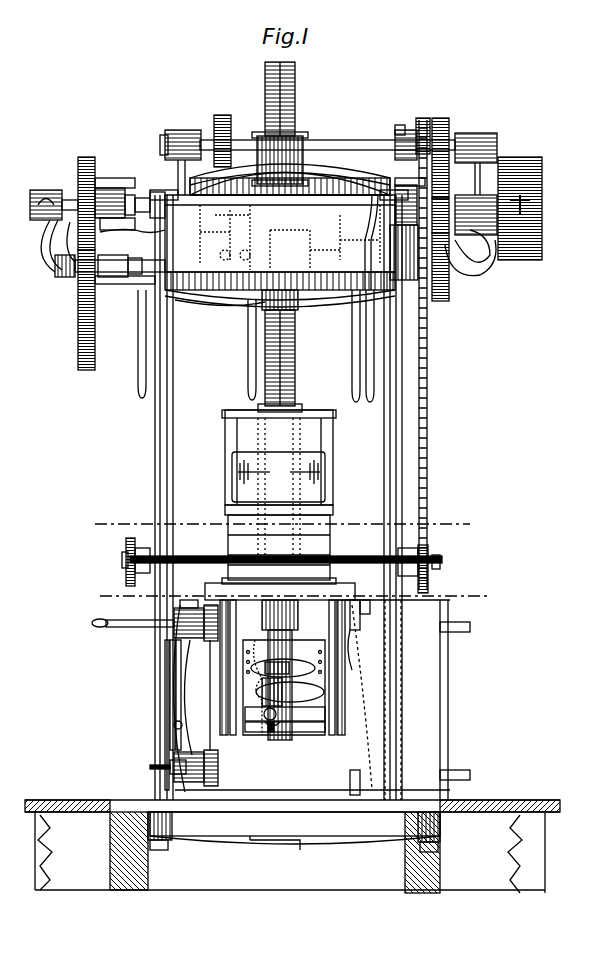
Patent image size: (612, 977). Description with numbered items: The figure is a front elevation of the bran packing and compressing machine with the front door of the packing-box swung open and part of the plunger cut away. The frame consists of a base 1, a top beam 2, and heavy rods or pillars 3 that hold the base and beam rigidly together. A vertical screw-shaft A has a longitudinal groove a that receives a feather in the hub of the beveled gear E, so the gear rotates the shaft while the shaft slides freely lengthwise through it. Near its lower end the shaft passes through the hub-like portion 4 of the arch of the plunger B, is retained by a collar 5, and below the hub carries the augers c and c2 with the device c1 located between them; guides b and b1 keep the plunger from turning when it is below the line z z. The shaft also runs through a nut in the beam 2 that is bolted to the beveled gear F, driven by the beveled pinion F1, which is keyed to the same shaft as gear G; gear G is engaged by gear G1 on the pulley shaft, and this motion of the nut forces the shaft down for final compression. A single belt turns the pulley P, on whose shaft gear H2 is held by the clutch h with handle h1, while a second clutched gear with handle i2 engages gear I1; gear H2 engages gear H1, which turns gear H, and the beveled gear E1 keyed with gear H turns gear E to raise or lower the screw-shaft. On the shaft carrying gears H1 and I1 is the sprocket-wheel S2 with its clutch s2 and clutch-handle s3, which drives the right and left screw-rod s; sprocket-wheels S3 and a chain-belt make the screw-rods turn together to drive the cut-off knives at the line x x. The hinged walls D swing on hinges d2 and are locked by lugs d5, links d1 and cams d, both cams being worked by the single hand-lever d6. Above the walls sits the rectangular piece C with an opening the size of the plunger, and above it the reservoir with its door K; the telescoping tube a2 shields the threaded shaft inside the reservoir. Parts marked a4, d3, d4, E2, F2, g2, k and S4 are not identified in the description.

The longitudinal groove a is at (276, 70).
The screw-shaft A is at (292, 345).
The telescoping tube a2 is at (298, 408).
The screw lower end a4 is at (275, 732).
The base 1 is at (292, 846).
The top beam 2 is at (280, 233).
The rods or pillars 3 is at (160, 448).
The hub-like portion 4 is at (280, 670).
The collar 5 is at (296, 668).
The plunger B is at (284, 687).
The guide b is at (236, 628).
The guide b1 is at (318, 625).
The rectangular piece C is at (210, 592).
The auger c is at (290, 692).
The device between augers c1 is at (285, 714).
The auger c2 is at (292, 732).
The hinged wall D is at (312, 700).
The cam d is at (162, 767).
The link d1 is at (184, 693).
The hinge d2 is at (350, 772).
The clamp rod d3 is at (186, 694).
The clamp rod d4 is at (185, 715).
The lug d5 is at (462, 624).
The hand-lever d6 is at (133, 616).
The beveled gear E is at (340, 168).
The beveled gear E1 is at (375, 185).
The shifter link E2 is at (470, 253).
The beveled gear F is at (280, 289).
The beveled pinion F1 is at (200, 295).
The counter shaft F2 is at (58, 265).
The gear G is at (78, 290).
The gear G1 is at (94, 168).
The clutch hub g2 is at (97, 204).
The gear H is at (446, 267).
The gear H1 is at (452, 128).
The gear H2 is at (450, 195).
The clutch h is at (443, 221).
The clutch handle h1 is at (371, 345).
The gear I1 is at (231, 133).
The clutch handle i2 is at (360, 130).
The door K is at (279, 497).
The clamp screws k is at (279, 472).
The pulley P is at (520, 208).
The sprocket-wheel S2 is at (423, 346).
The clutch s2 is at (138, 345).
The sprocket-wheel S3 is at (126, 553).
The clutch-handle s3 is at (352, 348).
The sprocket wheel S4 is at (420, 569).
The screw-rod s is at (332, 565).
The section line x x is at (283, 524).
The section line z z is at (293, 596).